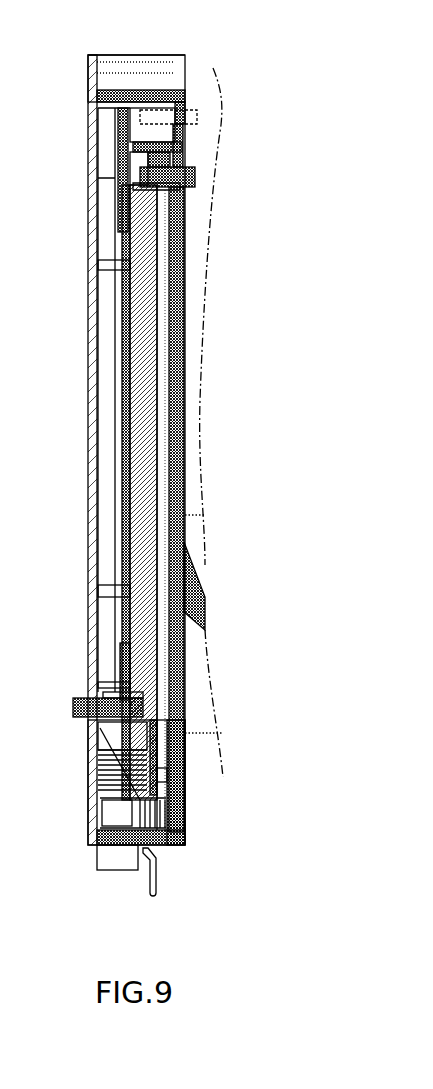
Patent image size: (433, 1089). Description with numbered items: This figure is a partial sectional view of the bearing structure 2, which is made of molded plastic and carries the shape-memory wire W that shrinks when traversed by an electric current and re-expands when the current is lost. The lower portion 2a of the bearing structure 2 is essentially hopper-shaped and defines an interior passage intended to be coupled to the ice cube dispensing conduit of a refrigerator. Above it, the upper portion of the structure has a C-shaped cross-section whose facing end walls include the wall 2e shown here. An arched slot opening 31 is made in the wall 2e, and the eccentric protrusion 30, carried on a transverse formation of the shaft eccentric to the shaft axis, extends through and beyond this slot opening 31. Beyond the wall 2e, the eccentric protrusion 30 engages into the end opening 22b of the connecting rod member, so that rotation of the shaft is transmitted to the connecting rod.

The bearing structure 2 is at (202, 105).
The lower portion 2a is at (190, 595).
The end wall 2e is at (185, 425).
The end opening 22b is at (122, 182).
The eccentric protrusion 30 is at (178, 178).
The arched slot opening 31 is at (178, 140).
The wire W is at (122, 383).